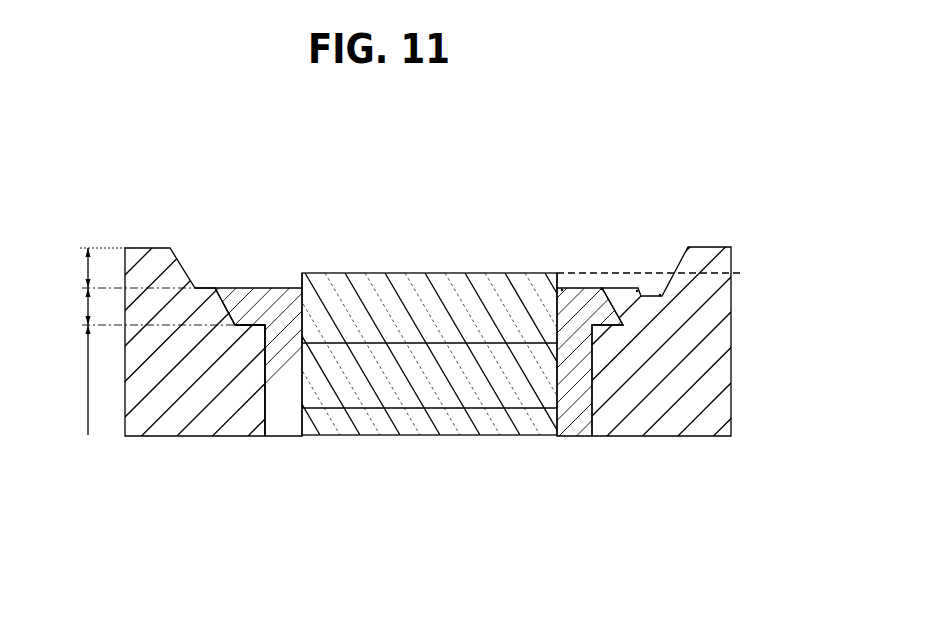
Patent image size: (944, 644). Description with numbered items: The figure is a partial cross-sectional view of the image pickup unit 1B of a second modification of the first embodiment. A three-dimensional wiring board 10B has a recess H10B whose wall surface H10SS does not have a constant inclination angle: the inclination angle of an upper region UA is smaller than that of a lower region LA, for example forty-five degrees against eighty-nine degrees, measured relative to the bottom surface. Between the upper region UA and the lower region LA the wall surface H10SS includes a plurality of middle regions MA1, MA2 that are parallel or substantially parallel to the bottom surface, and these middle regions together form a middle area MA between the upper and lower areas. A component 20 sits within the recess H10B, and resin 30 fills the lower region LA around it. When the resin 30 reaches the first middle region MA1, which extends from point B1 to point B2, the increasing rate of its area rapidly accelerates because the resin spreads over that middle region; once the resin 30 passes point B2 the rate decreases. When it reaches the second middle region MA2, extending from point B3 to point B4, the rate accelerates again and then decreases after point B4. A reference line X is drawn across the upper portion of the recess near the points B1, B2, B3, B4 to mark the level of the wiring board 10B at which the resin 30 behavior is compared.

The image pickup unit 1B is at (651, 173).
The three-dimensional wiring board 10B is at (673, 273).
The semiconductor element 20 is at (470, 272).
The resin 30 is at (257, 287).
The recess H10B is at (373, 236).
The wall surface H10SS is at (270, 379).
The middle region MA1 is at (249, 318).
The middle region MA2 is at (204, 284).
The point B1 is at (562, 290).
The point B2 is at (602, 289).
The point B3 is at (637, 291).
The point B4 is at (660, 295).
The reference line X is at (658, 276).
The upper region UA is at (117, 268).
The middle area MA is at (150, 306).
The lower region LA is at (64, 380).